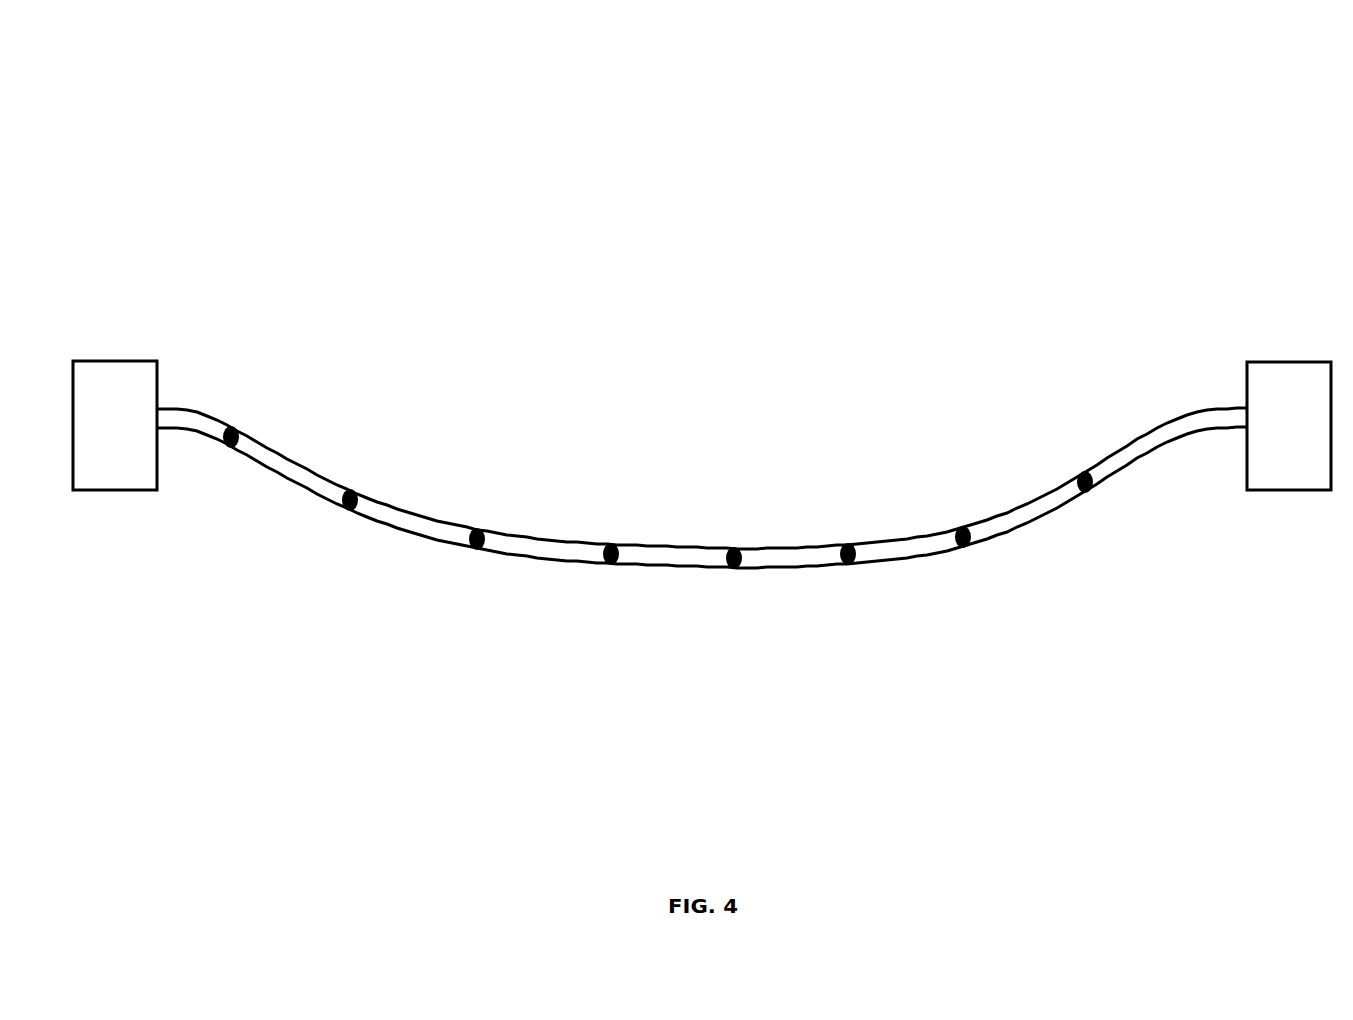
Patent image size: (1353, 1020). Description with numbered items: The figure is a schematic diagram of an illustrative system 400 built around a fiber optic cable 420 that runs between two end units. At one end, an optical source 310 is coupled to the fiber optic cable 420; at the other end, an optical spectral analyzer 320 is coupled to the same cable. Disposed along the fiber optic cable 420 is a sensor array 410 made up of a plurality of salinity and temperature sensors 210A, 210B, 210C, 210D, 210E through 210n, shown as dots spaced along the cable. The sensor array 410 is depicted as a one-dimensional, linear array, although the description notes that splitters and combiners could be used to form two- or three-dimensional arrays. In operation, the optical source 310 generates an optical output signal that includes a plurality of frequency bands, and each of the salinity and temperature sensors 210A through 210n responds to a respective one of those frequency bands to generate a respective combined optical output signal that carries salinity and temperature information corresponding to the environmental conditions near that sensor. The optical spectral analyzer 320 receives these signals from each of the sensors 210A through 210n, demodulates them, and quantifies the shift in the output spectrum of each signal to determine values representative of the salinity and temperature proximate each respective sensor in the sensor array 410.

The system 400 is at (1203, 122).
The optical source 310 is at (115, 425).
The optical spectral analyzer 320 is at (1289, 426).
The sensor array 410 is at (763, 570).
The fiber optic cable 420 is at (687, 546).
The salinity and temperature sensor 210A is at (232, 427).
The salinity and temperature sensor 210B is at (352, 489).
The salinity and temperature sensor 210C is at (478, 528).
The salinity and temperature sensor 210D is at (612, 543).
The salinity and temperature sensor 210E is at (737, 547).
The salinity and temperature sensor 210n is at (1083, 470).